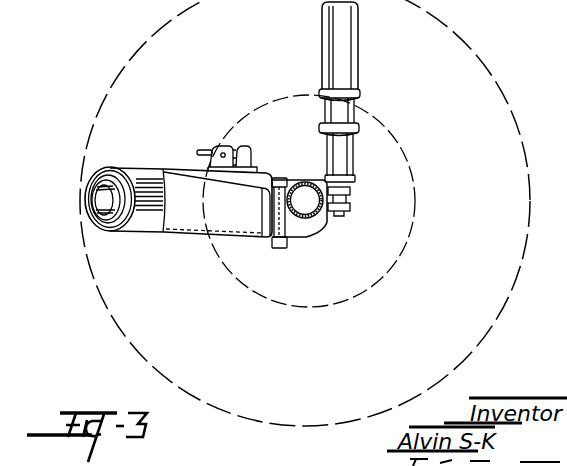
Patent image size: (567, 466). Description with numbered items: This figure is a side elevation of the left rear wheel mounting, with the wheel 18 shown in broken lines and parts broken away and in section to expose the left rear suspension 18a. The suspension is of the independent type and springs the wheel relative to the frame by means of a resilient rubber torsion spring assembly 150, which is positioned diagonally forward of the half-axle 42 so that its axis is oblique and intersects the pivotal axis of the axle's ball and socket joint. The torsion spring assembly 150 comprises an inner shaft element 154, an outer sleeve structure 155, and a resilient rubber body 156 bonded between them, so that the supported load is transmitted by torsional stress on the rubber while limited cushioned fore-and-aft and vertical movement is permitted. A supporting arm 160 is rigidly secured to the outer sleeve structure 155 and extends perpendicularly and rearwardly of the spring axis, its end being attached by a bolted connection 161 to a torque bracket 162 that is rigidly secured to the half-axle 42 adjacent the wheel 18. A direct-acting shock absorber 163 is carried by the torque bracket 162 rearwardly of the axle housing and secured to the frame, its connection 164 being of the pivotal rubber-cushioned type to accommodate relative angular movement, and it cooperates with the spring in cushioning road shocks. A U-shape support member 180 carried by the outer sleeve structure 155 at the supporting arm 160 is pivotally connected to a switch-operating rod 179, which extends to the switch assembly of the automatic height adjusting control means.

The left rear wheel 18 is at (492, 71).
The left rear suspension 18a is at (243, 245).
The half-axle 42 is at (306, 180).
The torsion spring assembly 150 is at (130, 168).
The inner shaft element 154 is at (104, 193).
The outer sleeve structure 155 is at (96, 224).
The resilient rubber body 156 is at (99, 176).
The supporting arm 160 is at (178, 233).
The bolted connection 161 is at (277, 247).
The torque bracket 162 is at (306, 233).
The shock absorber 163 is at (348, 52).
The connection of the shock absorber 164 is at (350, 190).
The switch-operating rod 179 is at (200, 149).
The U-shape support member 180 is at (252, 172).